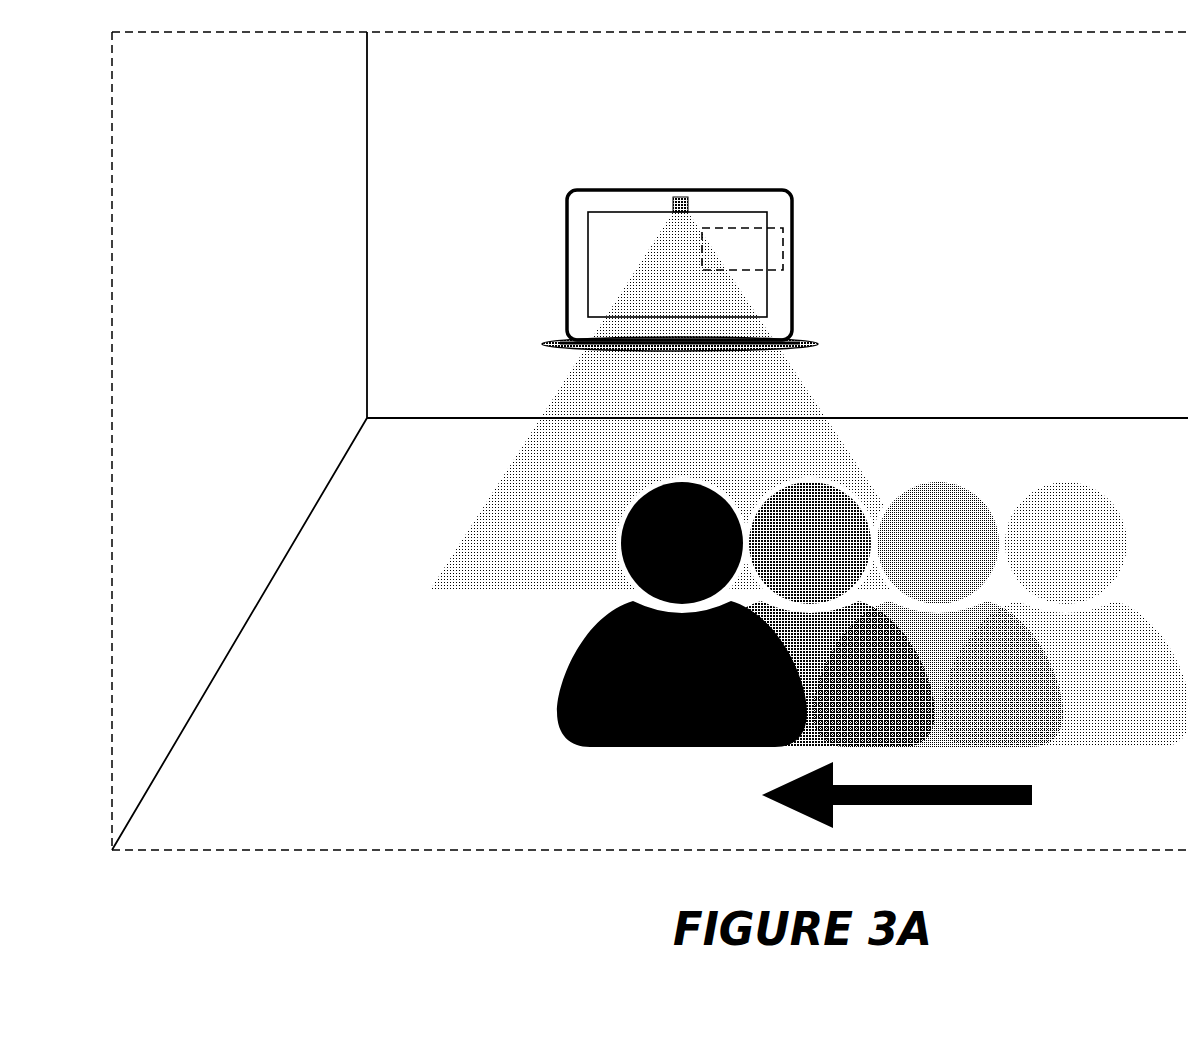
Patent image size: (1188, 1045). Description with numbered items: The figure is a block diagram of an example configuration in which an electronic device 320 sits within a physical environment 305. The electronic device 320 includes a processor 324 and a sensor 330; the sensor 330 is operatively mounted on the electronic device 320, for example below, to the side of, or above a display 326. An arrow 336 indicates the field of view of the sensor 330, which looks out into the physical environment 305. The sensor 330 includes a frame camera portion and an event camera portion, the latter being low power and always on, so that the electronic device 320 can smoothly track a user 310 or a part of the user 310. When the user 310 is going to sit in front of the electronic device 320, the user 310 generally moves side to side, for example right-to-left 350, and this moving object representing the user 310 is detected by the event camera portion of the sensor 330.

The physical environment 305 is at (1088, 131).
The user 310 is at (1123, 672).
The electronic device 320 is at (697, 368).
The processor 324 is at (752, 261).
The display 326 is at (643, 248).
The sensor 330 is at (690, 206).
The arrow 336 is at (778, 372).
The right-to-left 350 is at (926, 795).